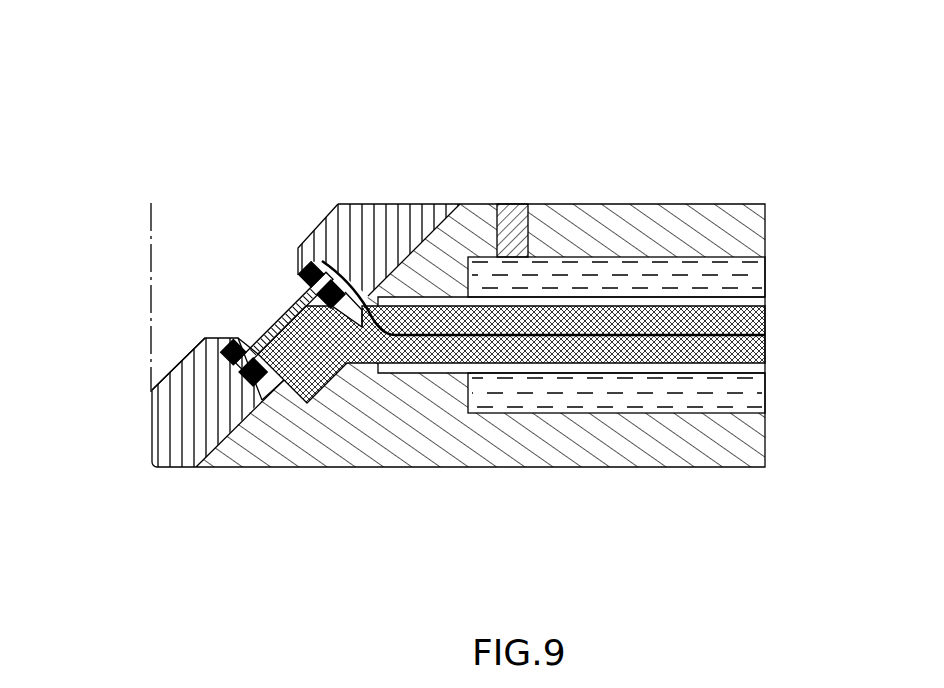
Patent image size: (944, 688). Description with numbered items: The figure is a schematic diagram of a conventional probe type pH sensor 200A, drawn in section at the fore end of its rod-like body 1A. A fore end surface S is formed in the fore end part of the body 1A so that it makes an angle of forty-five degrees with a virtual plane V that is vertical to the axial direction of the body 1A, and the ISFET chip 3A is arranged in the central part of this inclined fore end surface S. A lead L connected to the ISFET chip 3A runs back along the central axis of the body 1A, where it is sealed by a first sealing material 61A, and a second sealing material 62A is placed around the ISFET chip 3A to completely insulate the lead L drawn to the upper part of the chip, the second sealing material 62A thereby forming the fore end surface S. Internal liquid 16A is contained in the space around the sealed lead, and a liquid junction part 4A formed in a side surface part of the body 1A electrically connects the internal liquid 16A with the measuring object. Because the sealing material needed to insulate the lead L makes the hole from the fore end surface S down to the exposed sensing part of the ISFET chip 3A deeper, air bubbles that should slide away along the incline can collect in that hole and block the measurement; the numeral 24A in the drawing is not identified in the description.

The pH sensor 200A is at (260, 138).
The rod-like body 1A is at (678, 204).
The second sealing material 62A is at (370, 222).
The liquid junction part 4A is at (507, 214).
The internal liquid 16A is at (713, 281).
The first sealing material 61A is at (752, 313).
The ISFET chip 3A is at (294, 303).
The lead L is at (329, 256).
The fore end surface S is at (293, 232).
The virtual plane V is at (150, 218).
The chamfered surface 24A is at (252, 324).